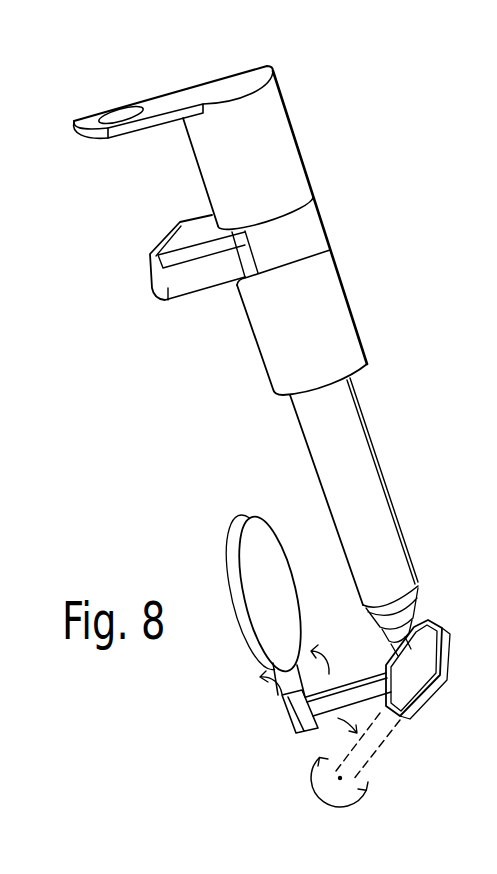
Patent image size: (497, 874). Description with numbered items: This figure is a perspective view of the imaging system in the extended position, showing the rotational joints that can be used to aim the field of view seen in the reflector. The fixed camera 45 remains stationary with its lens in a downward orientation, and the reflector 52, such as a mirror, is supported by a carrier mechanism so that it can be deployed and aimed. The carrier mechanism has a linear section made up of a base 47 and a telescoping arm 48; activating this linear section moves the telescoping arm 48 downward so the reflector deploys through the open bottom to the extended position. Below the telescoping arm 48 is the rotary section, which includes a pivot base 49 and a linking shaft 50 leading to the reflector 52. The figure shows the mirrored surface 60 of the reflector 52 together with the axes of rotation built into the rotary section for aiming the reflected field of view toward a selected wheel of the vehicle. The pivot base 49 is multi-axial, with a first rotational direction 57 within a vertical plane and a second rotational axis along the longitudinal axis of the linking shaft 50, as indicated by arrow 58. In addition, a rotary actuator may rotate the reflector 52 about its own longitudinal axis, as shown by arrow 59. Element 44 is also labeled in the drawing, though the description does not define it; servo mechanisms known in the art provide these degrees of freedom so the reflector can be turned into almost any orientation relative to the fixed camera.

The mounting plate 44 is at (168, 98).
The fixed camera 45 is at (192, 278).
The base 47 is at (340, 300).
The telescoping arm 48 is at (368, 462).
The pivot base 49 is at (412, 682).
The linking shaft 50 is at (357, 683).
The reflector 52 is at (239, 571).
The first rotational direction 57 is at (342, 726).
The arrow indicating second rotational axis 58 is at (350, 806).
The arrow indicating reflector rotation 59 is at (278, 695).
The mirrored surface 60 is at (272, 558).